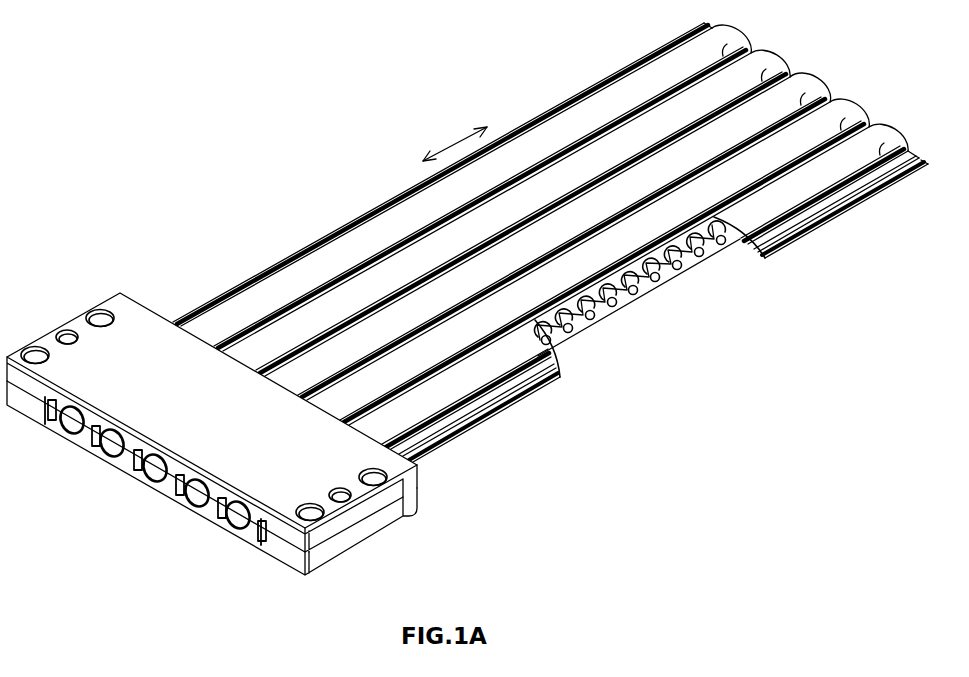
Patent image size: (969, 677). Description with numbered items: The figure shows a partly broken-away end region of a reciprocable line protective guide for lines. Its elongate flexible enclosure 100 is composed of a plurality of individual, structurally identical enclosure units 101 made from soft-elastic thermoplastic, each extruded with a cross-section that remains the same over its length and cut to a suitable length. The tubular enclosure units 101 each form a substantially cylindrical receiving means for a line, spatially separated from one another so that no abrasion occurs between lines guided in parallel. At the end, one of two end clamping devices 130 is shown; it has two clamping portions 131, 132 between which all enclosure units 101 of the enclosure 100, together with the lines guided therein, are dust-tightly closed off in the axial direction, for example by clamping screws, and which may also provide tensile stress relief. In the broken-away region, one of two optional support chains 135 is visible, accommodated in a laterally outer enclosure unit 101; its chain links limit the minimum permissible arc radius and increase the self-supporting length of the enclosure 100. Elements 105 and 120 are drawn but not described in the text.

The flexible enclosure 100 is at (306, 136).
The enclosure unit 101 is at (737, 36).
The connector port 105 is at (52, 418).
The flange strip 120 is at (790, 258).
The end clamping device 130 is at (99, 294).
The clamping portion 131 is at (396, 491).
The clamping portion 132 is at (348, 543).
The support chain 135 is at (629, 321).